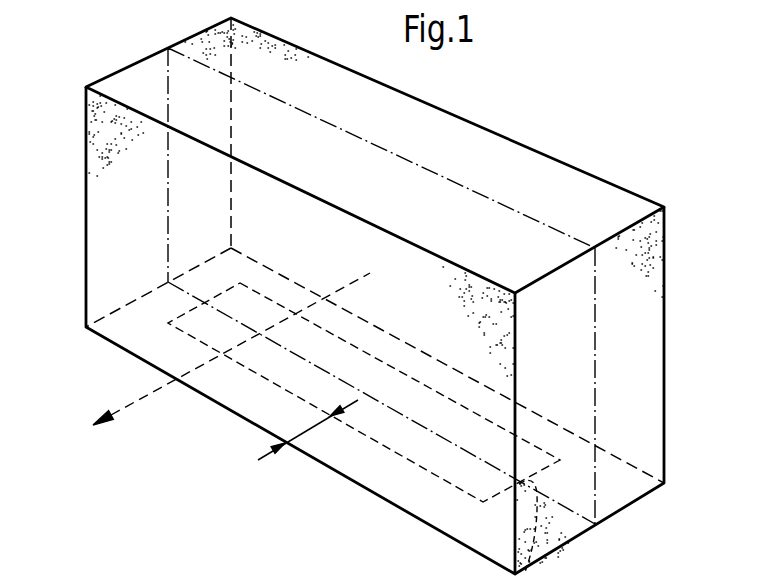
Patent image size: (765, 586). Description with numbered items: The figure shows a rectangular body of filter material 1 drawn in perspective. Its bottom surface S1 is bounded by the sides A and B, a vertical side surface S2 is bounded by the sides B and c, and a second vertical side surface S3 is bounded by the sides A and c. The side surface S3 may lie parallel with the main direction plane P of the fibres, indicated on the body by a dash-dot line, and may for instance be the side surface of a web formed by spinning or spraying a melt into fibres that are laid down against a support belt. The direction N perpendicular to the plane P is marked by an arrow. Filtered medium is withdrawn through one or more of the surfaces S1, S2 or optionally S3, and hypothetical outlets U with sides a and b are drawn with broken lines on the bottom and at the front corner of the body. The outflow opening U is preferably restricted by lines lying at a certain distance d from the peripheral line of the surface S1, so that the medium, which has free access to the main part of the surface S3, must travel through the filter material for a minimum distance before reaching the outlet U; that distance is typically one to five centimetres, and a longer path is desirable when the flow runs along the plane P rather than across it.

The body of filter material 1 is at (313, 54).
The main direction plane of the fibres P is at (372, 144).
The second vertical side surface S3 is at (113, 190).
The bottom surface S1 is at (120, 335).
The vertical side surface S2 is at (638, 435).
The side C c is at (664, 338).
The direction perpendicular to plane P N is at (221, 362).
The side a of outlet a is at (278, 385).
The distance d is at (304, 432).
The outlet U is at (400, 437).
The side b of outlet b is at (525, 572).
The side A is at (438, 532).
The side B is at (566, 543).